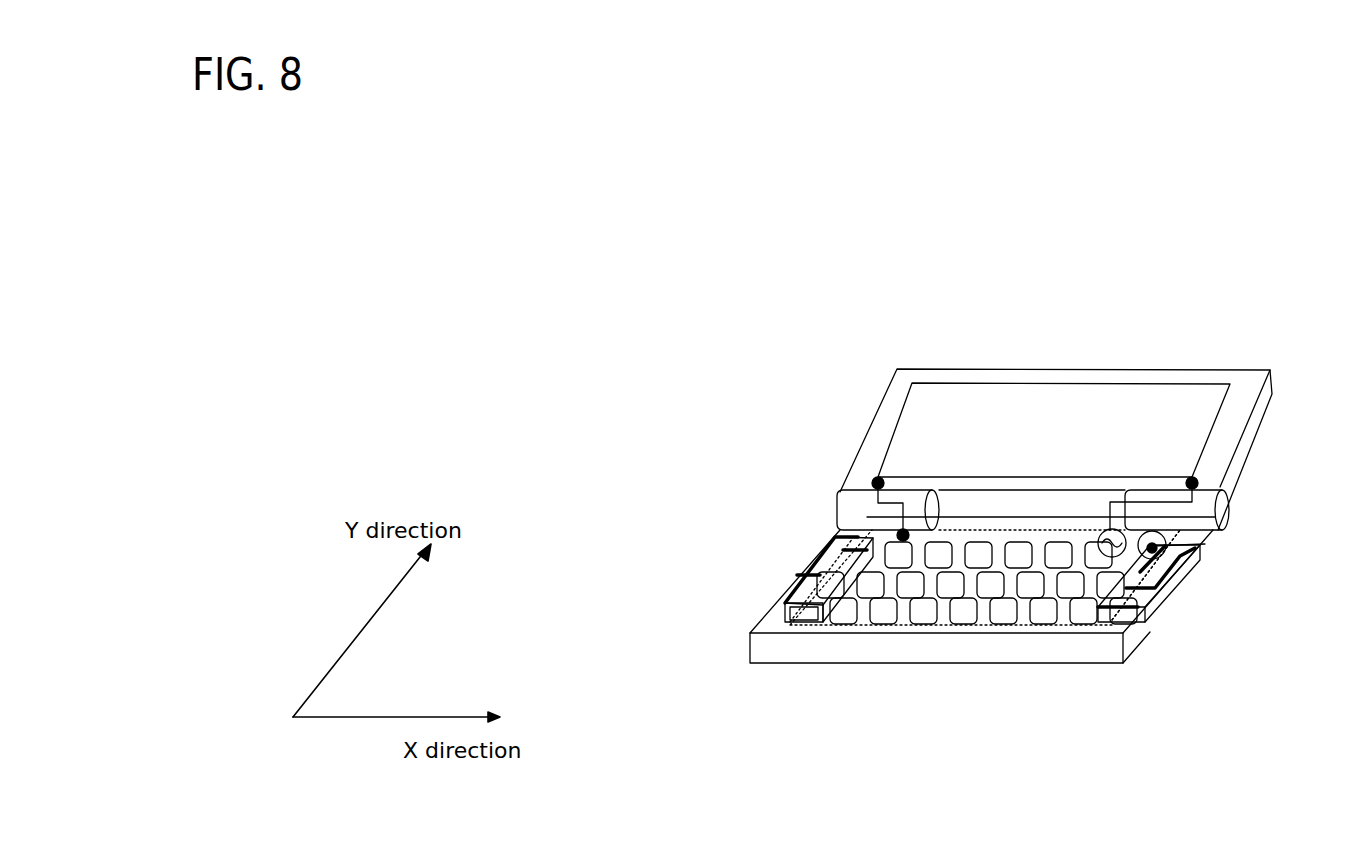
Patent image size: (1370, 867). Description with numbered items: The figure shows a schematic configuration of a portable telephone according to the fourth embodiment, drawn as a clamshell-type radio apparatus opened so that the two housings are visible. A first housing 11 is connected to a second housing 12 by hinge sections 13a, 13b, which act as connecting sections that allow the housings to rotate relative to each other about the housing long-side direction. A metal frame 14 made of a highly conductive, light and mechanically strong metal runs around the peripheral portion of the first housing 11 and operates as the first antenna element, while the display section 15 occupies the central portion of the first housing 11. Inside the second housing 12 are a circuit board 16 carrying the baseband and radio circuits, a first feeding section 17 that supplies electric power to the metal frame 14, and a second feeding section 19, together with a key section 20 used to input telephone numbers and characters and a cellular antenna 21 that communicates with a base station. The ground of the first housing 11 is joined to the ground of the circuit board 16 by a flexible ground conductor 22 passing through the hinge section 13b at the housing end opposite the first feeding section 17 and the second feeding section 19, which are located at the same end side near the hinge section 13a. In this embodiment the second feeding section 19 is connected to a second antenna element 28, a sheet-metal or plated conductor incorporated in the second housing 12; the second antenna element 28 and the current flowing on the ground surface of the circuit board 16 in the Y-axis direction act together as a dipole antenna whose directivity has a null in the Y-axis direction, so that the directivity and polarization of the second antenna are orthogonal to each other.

The first housing 11 is at (1187, 370).
The second housing 12 is at (775, 650).
The hinge section 13a is at (1180, 518).
The hinge section 13b is at (843, 517).
The metal frame 14 is at (1222, 440).
The display section 15 is at (1018, 395).
The circuit board 16 is at (978, 621).
The first feeding section 17 is at (1140, 622).
The second feeding section 19 is at (1122, 553).
The key section 20 is at (826, 580).
The cellular antenna 21 is at (787, 608).
The flexible ground conductor 22 is at (876, 488).
The second antenna element 28 is at (1160, 547).